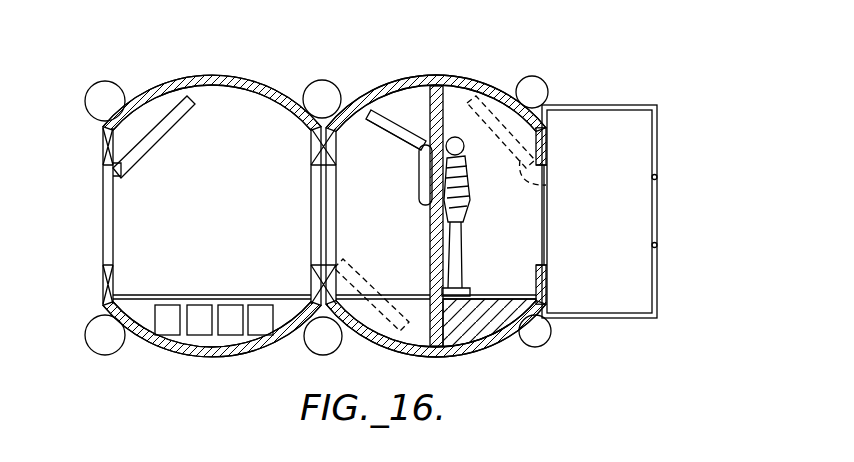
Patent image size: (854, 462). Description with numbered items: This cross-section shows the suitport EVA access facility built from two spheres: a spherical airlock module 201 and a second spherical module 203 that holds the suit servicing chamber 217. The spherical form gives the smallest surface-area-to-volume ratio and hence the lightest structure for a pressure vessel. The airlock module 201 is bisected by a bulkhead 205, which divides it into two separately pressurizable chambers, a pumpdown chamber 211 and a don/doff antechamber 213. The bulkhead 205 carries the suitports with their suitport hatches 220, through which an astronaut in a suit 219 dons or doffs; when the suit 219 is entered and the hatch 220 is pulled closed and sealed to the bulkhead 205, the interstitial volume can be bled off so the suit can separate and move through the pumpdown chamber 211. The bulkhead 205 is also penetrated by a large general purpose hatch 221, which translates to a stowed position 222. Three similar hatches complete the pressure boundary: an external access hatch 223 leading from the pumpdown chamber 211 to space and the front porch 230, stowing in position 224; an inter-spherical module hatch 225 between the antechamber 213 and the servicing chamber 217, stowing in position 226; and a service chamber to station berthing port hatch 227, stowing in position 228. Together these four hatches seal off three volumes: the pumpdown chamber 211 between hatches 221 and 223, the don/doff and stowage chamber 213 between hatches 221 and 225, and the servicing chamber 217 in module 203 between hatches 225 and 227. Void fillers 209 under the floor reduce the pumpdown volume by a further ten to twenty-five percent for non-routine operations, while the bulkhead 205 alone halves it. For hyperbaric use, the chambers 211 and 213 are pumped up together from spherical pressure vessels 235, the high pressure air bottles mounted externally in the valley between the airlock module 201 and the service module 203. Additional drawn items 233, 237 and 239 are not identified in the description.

The spherical airlock module 201 is at (460, 72).
The second spherical module 203 is at (253, 73).
The bulkhead 205 is at (475, 88).
The void fillers 209 is at (468, 329).
The pumpdown chamber 211 is at (519, 262).
The don/doff antechamber 213 is at (383, 198).
The servicing chamber 217 is at (228, 236).
The suits 219 is at (468, 196).
The suitport hatches 220 is at (417, 195).
The general purpose hatch 221 is at (404, 117).
The stow position of hatch 221 222 is at (400, 139).
The external access hatch 223 is at (550, 225).
The stow position of hatch 223 224 is at (546, 185).
The inter-spherical module hatch 225 is at (331, 238).
The stow position of hatch 225 226 is at (350, 263).
The service chamber to station berthing port hatch 227 is at (139, 162).
The stow position of hatch 227 228 is at (168, 132).
The front porch 230 is at (658, 121).
The storage lockers 233 is at (201, 318).
The spherical pressure vessels 235 is at (328, 88).
The storage lockers 237 is at (231, 319).
The coupling ring 239 is at (542, 92).